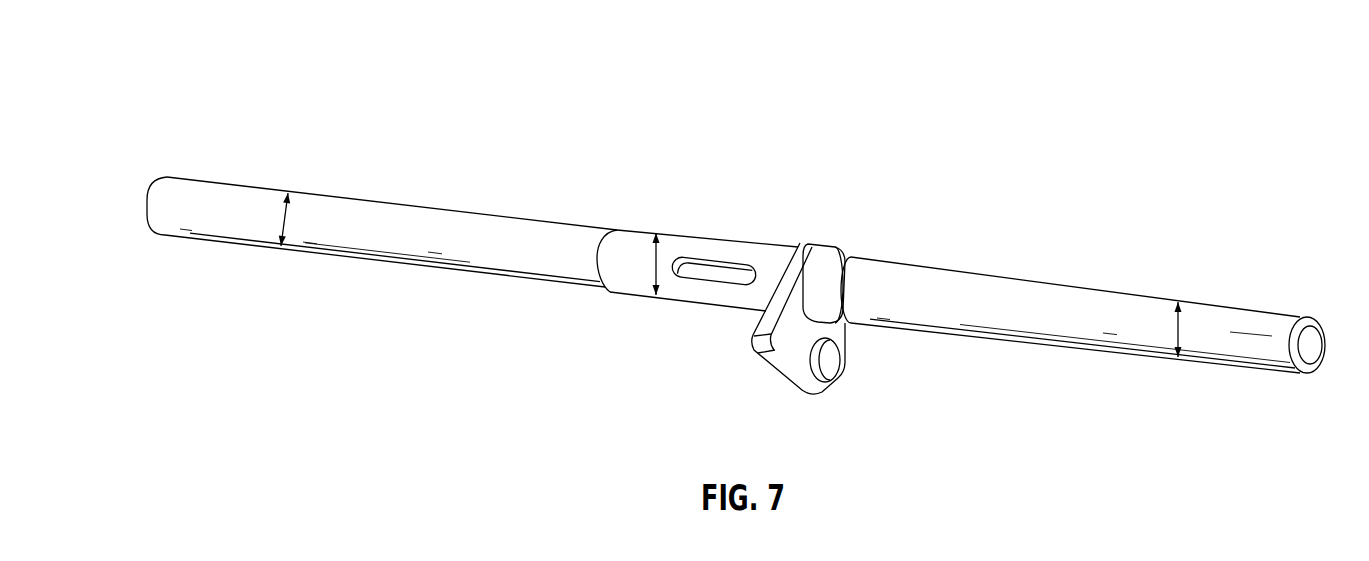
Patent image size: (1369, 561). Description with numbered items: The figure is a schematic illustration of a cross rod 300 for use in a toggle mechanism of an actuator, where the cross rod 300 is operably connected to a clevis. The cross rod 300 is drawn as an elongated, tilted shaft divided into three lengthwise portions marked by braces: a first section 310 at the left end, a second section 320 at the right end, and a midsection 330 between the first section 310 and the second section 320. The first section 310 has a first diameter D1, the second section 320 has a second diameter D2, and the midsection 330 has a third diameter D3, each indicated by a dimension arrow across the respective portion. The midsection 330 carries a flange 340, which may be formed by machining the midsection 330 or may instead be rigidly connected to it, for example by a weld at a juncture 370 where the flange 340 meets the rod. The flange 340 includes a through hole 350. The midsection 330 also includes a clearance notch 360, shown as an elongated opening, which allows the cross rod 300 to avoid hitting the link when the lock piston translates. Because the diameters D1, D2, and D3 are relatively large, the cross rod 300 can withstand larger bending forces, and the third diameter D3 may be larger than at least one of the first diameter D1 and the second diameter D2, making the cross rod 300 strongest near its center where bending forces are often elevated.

The cross rod 300 is at (1268, 78).
The first section 310 is at (620, 228).
The second section 320 is at (1323, 330).
The midsection 330 is at (857, 257).
The flange 340 is at (785, 353).
The through hole 350 is at (826, 362).
The clearance notch 360 is at (712, 277).
The juncture 370 is at (802, 242).
The first diameter D1 is at (278, 222).
The second diameter D2 is at (1170, 337).
The third diameter D3 is at (652, 272).